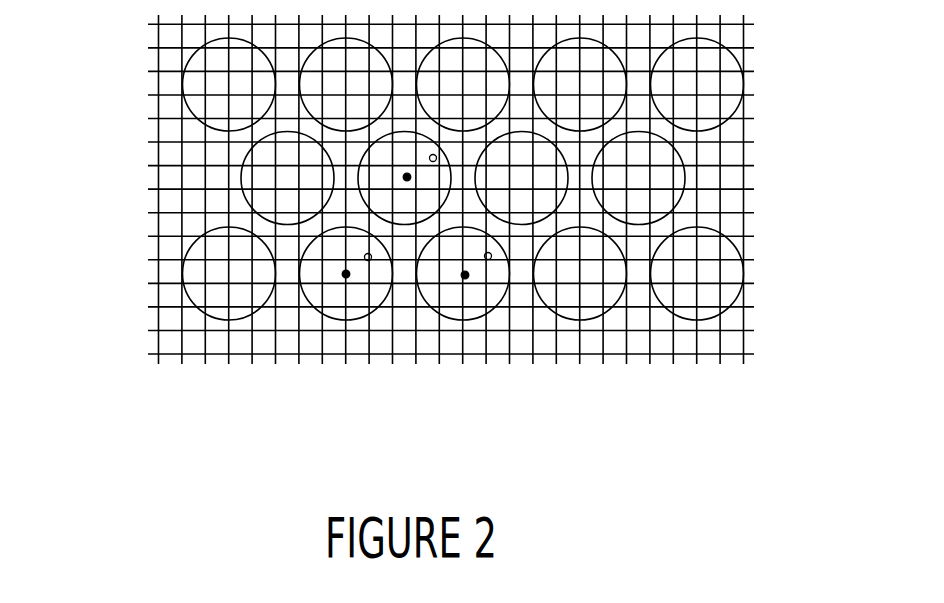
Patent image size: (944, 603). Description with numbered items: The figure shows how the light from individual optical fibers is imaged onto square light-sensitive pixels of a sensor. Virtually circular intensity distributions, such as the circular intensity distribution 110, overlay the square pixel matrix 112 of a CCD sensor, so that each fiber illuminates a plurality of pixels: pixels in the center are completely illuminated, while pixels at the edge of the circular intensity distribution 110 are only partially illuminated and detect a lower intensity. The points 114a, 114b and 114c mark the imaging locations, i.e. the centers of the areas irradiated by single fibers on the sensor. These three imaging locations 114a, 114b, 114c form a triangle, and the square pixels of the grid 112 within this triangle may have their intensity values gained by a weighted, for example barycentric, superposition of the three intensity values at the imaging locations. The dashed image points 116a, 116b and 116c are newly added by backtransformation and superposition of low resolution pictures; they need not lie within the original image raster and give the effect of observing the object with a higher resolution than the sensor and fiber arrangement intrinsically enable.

The circular intensity distribution 110 is at (186, 279).
The pixel matrix 112 is at (712, 353).
The imaging location 114a is at (346, 274).
The imaging location 114b is at (407, 177).
The imaging location 114c is at (465, 275).
The image point 116a is at (368, 260).
The image point 116b is at (438, 163).
The image point 116c is at (492, 262).